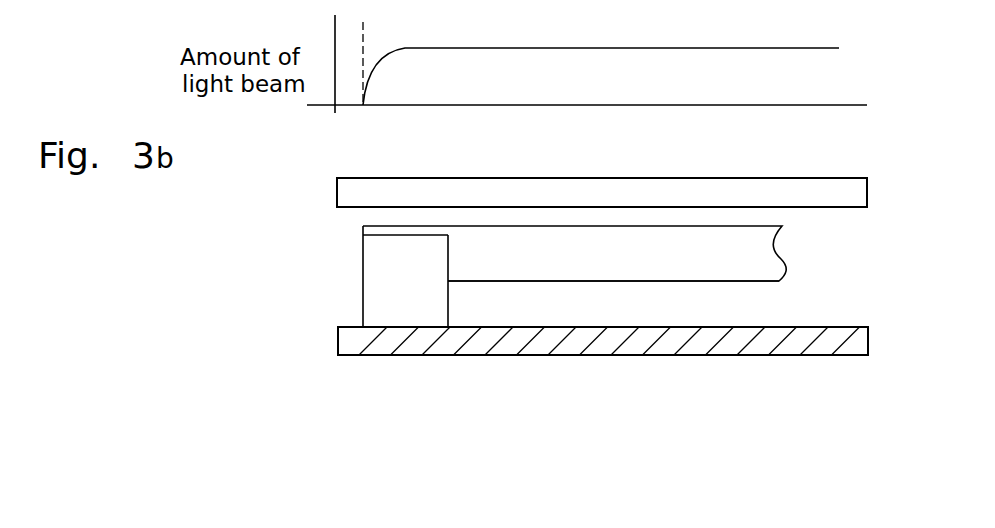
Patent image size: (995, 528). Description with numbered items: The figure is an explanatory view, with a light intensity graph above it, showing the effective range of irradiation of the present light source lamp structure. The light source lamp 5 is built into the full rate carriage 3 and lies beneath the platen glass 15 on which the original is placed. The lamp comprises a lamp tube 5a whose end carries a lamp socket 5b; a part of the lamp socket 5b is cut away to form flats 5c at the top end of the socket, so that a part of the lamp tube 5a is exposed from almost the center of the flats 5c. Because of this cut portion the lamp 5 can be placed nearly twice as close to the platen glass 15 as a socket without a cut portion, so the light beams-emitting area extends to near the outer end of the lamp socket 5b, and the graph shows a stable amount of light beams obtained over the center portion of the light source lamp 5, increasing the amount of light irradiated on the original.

The platen glass 15 is at (348, 195).
The light source lamp 5 is at (635, 257).
The lamp tube 5a is at (705, 268).
The lamp socket 5b is at (375, 292).
The flats 5c is at (405, 233).
The full rate carriage 3 is at (533, 347).